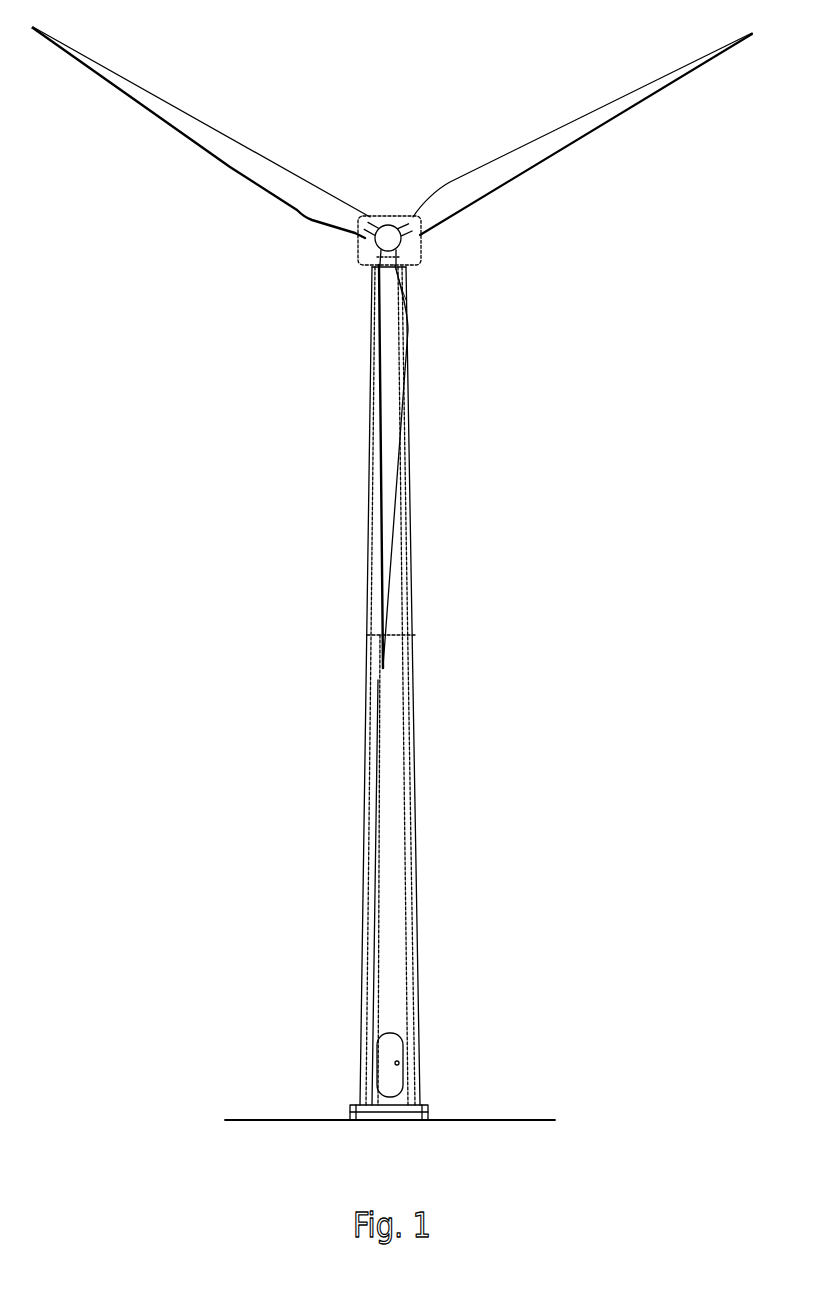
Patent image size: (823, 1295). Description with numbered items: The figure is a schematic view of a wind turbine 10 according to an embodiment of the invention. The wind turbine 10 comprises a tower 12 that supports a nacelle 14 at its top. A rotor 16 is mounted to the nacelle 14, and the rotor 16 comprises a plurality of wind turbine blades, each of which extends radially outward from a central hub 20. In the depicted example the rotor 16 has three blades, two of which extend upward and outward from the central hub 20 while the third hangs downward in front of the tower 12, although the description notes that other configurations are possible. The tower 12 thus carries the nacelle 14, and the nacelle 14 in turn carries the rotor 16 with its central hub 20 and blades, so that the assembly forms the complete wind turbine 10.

The wind turbine 10 is at (272, 551).
The tower 12 is at (415, 680).
The nacelle 14 is at (422, 262).
The rotor 16 is at (270, 311).
The central hub 20 is at (388, 225).